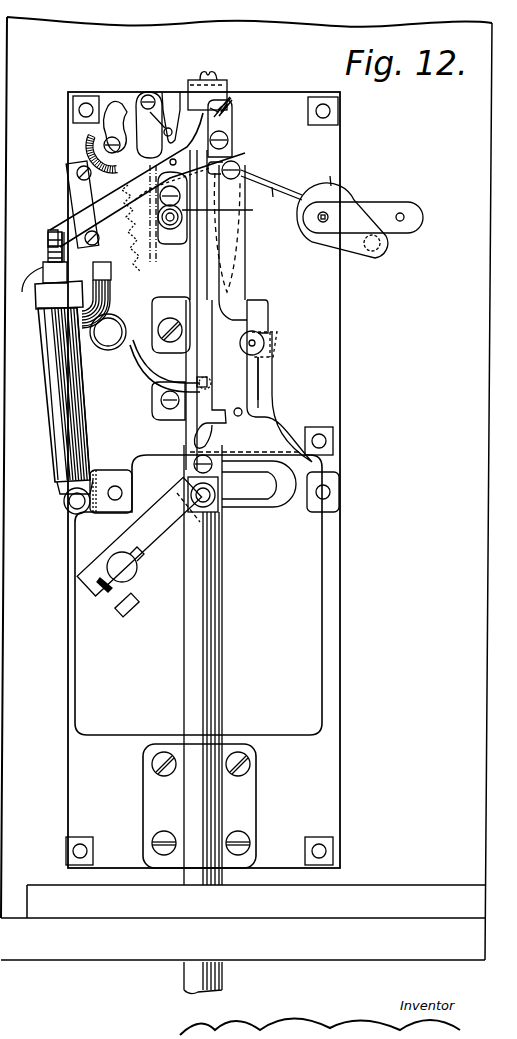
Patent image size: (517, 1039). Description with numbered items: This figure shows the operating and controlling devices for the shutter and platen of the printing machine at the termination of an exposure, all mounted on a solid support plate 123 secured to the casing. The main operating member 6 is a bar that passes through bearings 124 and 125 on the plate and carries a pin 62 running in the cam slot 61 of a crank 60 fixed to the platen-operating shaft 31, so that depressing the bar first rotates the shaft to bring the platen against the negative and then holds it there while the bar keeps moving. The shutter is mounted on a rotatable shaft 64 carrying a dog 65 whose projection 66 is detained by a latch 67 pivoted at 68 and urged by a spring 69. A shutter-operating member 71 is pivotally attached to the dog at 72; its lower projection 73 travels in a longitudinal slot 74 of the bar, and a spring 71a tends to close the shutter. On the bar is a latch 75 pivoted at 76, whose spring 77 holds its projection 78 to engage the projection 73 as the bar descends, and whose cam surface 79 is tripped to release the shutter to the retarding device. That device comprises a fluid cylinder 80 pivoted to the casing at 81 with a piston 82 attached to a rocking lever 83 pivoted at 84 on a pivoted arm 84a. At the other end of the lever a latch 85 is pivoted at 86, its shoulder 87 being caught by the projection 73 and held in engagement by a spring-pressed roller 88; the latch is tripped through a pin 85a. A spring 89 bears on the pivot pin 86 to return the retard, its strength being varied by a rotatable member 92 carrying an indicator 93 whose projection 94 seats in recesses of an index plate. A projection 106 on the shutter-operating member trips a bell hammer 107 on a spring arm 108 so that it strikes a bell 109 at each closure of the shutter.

The main operating member 6 is at (210, 642).
The platen-operating shaft 31 is at (125, 575).
The crank 60 is at (139, 547).
The cam slot 61 is at (252, 503).
The pin 62 is at (194, 468).
The rotatable shaft 64 is at (171, 128).
The dog 65 is at (165, 128).
The projection 66 is at (172, 92).
The detent or latch 67 is at (117, 104).
The pivot 68 is at (90, 150).
The spring 69 is at (104, 145).
The shutter-operating member 71 is at (152, 262).
The spring 71a is at (146, 187).
The pivot 72 is at (148, 94).
The projection 73 is at (208, 380).
The longitudinal slot 74 is at (198, 278).
The latch 75 is at (232, 160).
The pivot 76 is at (226, 132).
The spring 77 is at (232, 95).
The projection 78 is at (205, 208).
The cam surface 79 is at (213, 253).
The cylinder 80 is at (56, 390).
The pivot 81 is at (66, 506).
The piston 82 is at (25, 287).
The rocking lever 83 is at (184, 165).
The pivot 84 is at (176, 182).
The pivoted arm 84a is at (233, 214).
The latch 85 is at (265, 313).
The pin 85a is at (242, 415).
The pivot pin 86 is at (240, 173).
The shoulder 87 is at (204, 385).
The spring-pressed roller 88 is at (172, 184).
The spring 89 is at (282, 190).
The rotatable member 92 is at (357, 246).
The indicator 93 is at (363, 217).
The projection 94 is at (403, 213).
The projection 106 is at (140, 270).
The bell hammer 107 is at (158, 340).
The spring arm 108 is at (130, 312).
The bell 109 is at (107, 350).
The plate 123 is at (198, 595).
The bearing 124 is at (199, 806).
The bearing 125 is at (256, 312).